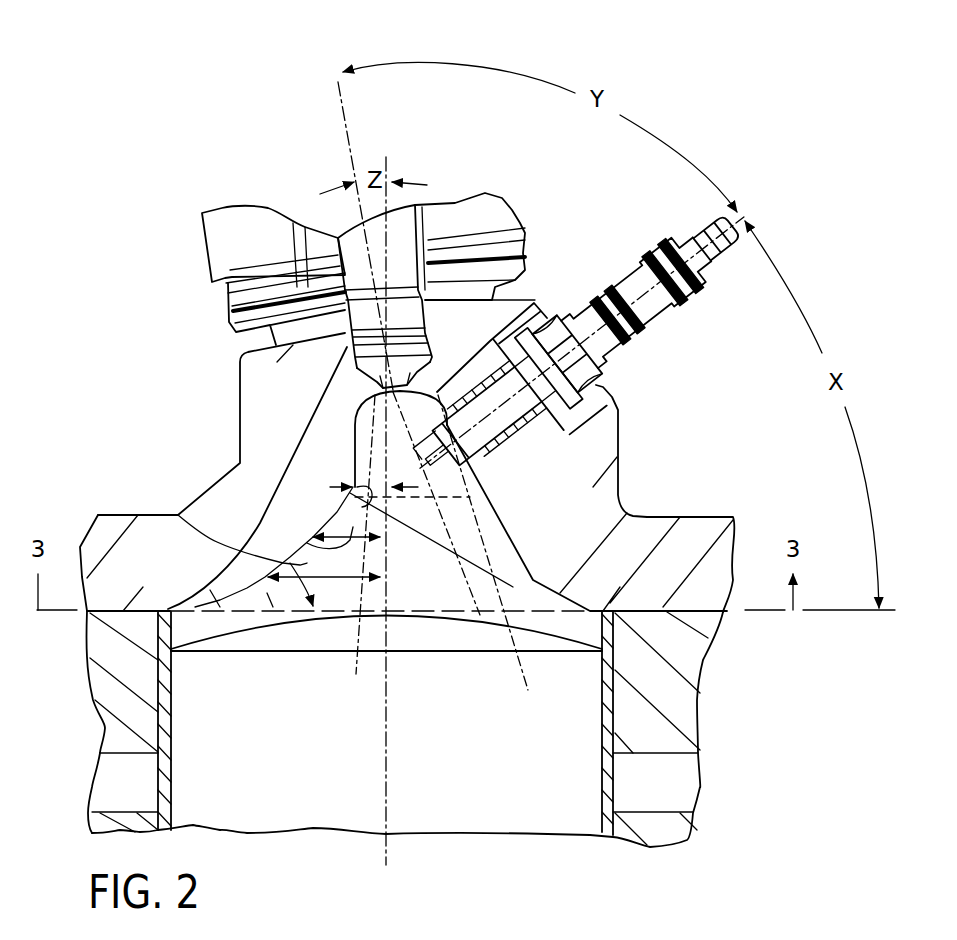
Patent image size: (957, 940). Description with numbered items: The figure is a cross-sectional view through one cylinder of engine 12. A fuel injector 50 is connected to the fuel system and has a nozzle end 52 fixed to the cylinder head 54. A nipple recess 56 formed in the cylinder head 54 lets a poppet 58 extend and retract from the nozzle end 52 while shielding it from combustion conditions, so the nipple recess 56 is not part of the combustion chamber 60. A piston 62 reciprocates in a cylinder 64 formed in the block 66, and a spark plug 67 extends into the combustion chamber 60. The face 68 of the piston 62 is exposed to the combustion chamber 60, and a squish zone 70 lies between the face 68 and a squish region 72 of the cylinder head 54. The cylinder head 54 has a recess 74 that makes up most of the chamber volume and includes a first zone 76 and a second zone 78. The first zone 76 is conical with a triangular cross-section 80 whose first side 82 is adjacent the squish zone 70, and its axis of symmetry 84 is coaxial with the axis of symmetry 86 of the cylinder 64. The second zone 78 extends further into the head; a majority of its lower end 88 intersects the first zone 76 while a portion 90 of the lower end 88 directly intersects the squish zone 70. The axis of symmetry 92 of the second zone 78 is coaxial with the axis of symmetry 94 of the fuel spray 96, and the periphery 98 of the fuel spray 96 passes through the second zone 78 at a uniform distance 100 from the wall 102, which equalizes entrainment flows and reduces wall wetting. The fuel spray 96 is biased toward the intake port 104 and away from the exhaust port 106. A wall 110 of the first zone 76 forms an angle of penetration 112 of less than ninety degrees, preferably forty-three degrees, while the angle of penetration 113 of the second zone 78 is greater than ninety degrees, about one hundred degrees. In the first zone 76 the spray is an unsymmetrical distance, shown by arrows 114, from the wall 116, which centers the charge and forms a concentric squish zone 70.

The engine 12 is at (722, 114).
The fuel injector 50 is at (222, 243).
The nozzle end 52 is at (343, 360).
The cylinder head 54 is at (237, 437).
The nipple recess 56 is at (520, 297).
The poppet 58 is at (432, 297).
The combustion chamber 60 is at (570, 527).
The piston 62 is at (469, 789).
The cylinder 64 is at (646, 672).
The block 66 is at (113, 665).
The spark plug 67 is at (640, 287).
The face 68 is at (302, 640).
The squish zone 70 is at (612, 636).
The squish region 72 is at (190, 583).
The recess 74 is at (497, 490).
The first zone 76 is at (337, 527).
The second zone 78 is at (368, 432).
The triangular cross-section 80 is at (258, 588).
The first side 82 is at (430, 593).
The axis of symmetry 84 is at (383, 848).
The axis of symmetry 86 is at (320, 530).
The lower end 88 is at (393, 527).
The portion 90 is at (518, 592).
The axis of symmetry 92 is at (338, 82).
The axis of symmetry 94 is at (305, 217).
The fuel spray 96 is at (476, 622).
The periphery 98 is at (441, 560).
The uniform distance 100 is at (350, 490).
The wall 102 is at (508, 571).
The intake port 104 is at (683, 783).
The exhaust port 106 is at (108, 782).
The wall 110 is at (235, 563).
The angle of penetration 112 is at (307, 532).
The angle of penetration 113 is at (368, 476).
The arrows 114 is at (307, 545).
The wall 116 is at (178, 515).